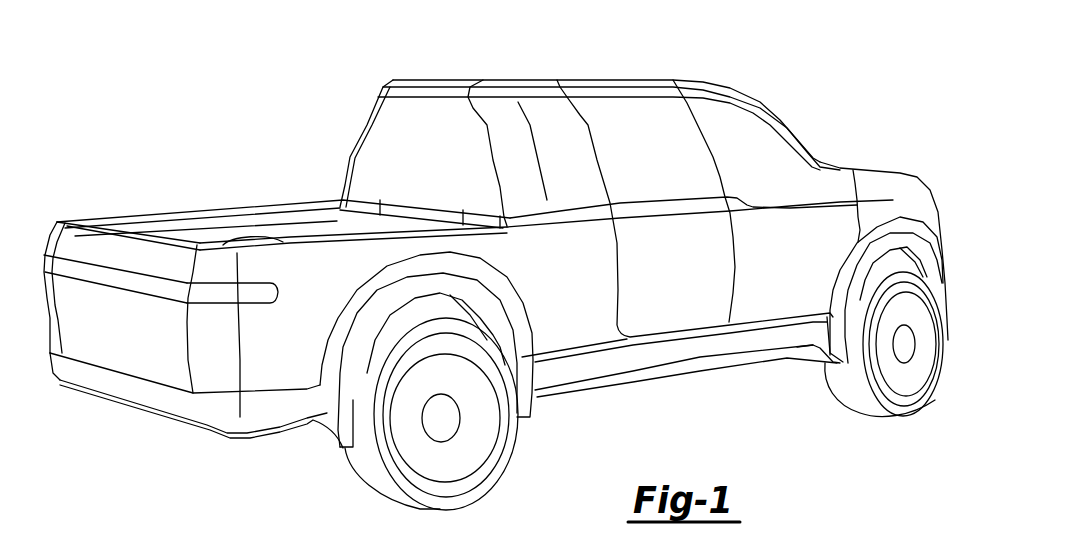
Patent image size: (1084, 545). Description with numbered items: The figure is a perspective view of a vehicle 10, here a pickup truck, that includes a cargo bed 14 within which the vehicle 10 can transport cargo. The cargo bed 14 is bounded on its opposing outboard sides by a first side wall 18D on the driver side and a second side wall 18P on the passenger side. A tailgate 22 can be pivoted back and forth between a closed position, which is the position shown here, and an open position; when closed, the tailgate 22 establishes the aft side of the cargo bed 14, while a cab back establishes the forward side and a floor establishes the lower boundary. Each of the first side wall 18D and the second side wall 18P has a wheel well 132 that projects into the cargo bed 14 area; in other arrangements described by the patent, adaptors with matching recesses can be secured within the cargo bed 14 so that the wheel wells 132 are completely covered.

The vehicle 10 is at (720, 84).
The cargo bed 14 is at (264, 367).
The first side wall 18D is at (133, 217).
The second side wall 18P is at (426, 250).
The tailgate 22 is at (150, 363).
The wheel well 132 is at (253, 232).